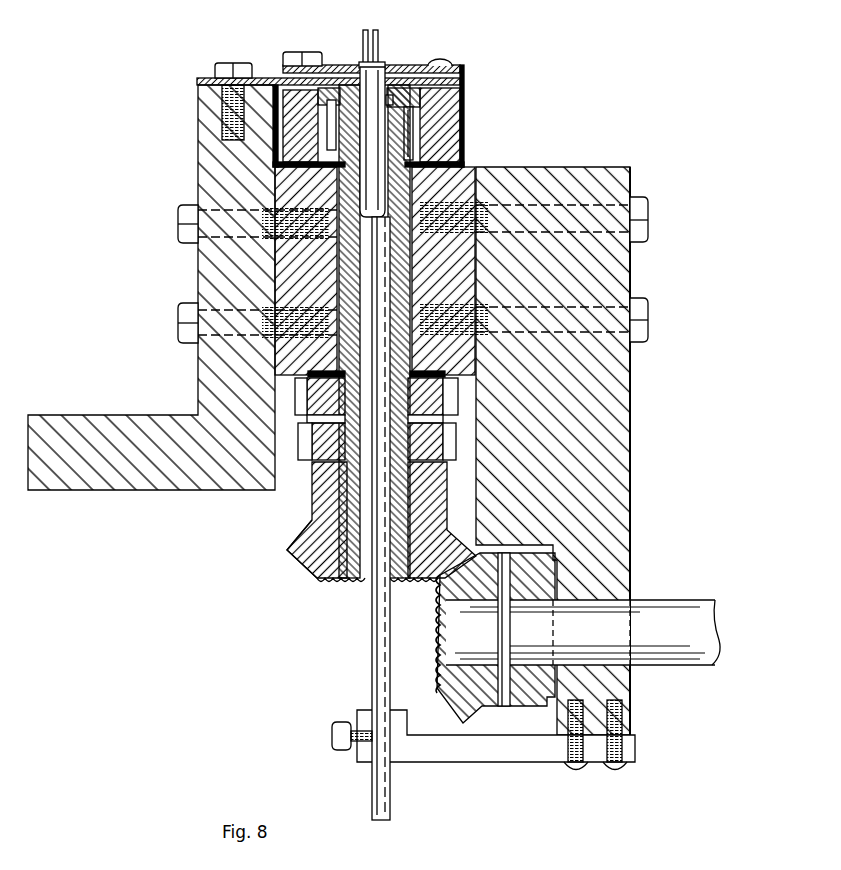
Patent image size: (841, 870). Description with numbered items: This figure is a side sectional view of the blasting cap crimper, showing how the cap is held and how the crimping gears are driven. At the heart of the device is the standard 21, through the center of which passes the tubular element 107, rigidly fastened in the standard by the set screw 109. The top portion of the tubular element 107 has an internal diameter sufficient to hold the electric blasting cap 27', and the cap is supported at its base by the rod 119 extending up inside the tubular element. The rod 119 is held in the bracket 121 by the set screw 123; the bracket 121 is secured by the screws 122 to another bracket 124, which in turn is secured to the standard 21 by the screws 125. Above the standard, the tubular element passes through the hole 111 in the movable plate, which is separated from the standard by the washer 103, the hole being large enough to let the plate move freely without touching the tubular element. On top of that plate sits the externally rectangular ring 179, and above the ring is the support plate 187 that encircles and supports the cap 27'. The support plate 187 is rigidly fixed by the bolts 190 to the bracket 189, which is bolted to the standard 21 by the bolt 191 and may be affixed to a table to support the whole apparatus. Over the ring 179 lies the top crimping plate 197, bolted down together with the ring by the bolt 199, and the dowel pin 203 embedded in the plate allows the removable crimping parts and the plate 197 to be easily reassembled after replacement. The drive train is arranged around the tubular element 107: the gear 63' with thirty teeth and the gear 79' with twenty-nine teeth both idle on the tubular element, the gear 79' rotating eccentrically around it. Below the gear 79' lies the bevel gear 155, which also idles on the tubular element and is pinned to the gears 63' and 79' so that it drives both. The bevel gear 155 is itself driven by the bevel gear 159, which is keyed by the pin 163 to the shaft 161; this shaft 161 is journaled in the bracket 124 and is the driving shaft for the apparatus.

The support plate 187 is at (216, 80).
The bracket 189 is at (198, 133).
The bolts 190 is at (240, 66).
The bolt 199 is at (297, 55).
The electric blasting cap 27' is at (391, 123).
The dowel pin 203 is at (442, 62).
The top crimping plate 197 is at (462, 70).
The ring 179 is at (464, 118).
The hole 111 is at (450, 132).
The washer 103 is at (442, 165).
The standard 21 is at (500, 176).
The bolt 191 is at (178, 226).
The set screw 109 is at (300, 266).
The screws 125 is at (645, 243).
The bracket 124 is at (631, 418).
The gear 79' is at (311, 393).
The gear 63' is at (360, 467).
The tubular element 107 is at (320, 523).
The bevel gear 155 is at (293, 560).
The rod 119 is at (373, 605).
The bevel gear 159 is at (436, 660).
The shaft 161 is at (655, 601).
The pin 163 is at (503, 695).
The set screw 123 is at (333, 742).
The bracket 121 is at (482, 761).
The screws 122 is at (600, 768).